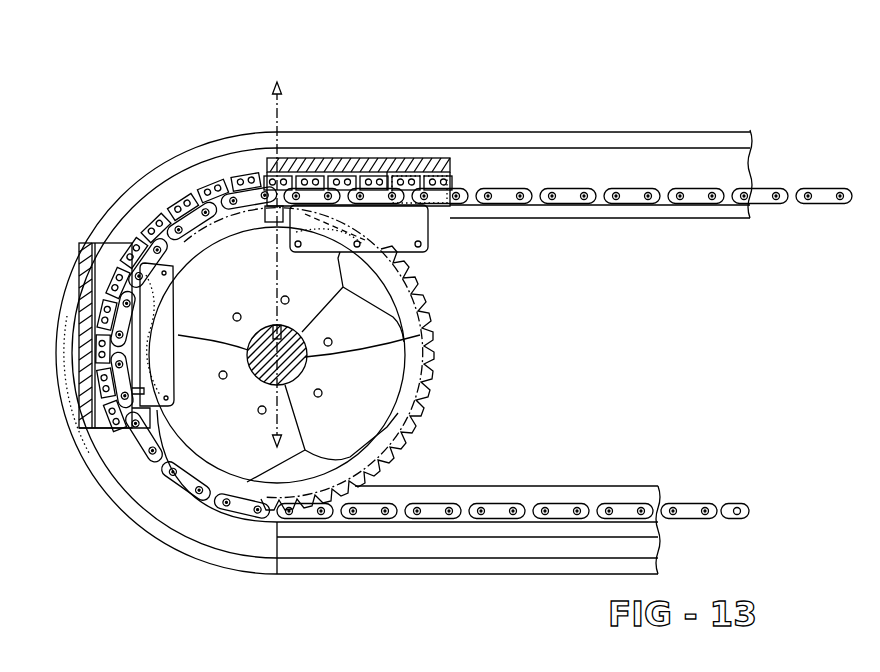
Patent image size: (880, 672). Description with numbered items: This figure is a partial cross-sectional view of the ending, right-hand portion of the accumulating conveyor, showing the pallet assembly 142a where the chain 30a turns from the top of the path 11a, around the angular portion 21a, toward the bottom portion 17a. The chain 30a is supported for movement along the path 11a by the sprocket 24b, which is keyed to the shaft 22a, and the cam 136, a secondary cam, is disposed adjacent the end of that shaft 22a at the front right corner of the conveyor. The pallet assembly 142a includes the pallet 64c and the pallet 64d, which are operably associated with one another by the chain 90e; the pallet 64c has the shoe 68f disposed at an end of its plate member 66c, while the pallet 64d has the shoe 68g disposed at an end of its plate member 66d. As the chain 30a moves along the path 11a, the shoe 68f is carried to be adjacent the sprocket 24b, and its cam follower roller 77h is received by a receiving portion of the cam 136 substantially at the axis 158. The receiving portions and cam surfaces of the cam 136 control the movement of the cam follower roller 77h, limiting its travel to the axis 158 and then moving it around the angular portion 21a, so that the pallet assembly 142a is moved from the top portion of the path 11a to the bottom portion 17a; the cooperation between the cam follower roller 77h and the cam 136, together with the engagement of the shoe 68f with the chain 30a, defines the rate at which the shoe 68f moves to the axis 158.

The path 11a is at (587, 88).
The bottom portion 17a is at (111, 6).
The angular portion 21a is at (74, 490).
The shaft 22a is at (422, 335).
The sprocket 24b is at (390, 284).
The chain 30a is at (820, 190).
The pallet 64c is at (62, 300).
The pallet 64d is at (426, 109).
The plate member 66c is at (86, 451).
The plate member 66d is at (342, 157).
The shoe 68f is at (175, 523).
The shoe 68g is at (438, 227).
The cam follower roller 77h is at (197, 340).
The chain 90e is at (182, 215).
The cam 136 is at (362, 423).
The pallet assembly 142a is at (186, 140).
The axis 158 is at (272, 113).